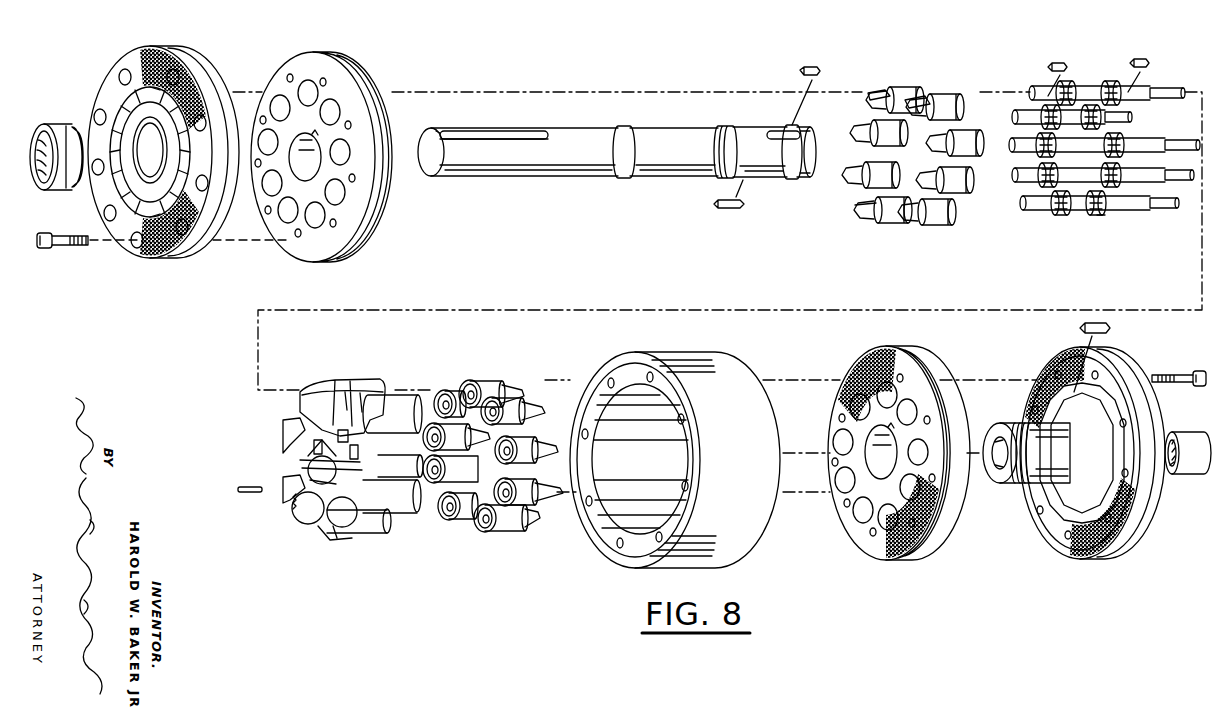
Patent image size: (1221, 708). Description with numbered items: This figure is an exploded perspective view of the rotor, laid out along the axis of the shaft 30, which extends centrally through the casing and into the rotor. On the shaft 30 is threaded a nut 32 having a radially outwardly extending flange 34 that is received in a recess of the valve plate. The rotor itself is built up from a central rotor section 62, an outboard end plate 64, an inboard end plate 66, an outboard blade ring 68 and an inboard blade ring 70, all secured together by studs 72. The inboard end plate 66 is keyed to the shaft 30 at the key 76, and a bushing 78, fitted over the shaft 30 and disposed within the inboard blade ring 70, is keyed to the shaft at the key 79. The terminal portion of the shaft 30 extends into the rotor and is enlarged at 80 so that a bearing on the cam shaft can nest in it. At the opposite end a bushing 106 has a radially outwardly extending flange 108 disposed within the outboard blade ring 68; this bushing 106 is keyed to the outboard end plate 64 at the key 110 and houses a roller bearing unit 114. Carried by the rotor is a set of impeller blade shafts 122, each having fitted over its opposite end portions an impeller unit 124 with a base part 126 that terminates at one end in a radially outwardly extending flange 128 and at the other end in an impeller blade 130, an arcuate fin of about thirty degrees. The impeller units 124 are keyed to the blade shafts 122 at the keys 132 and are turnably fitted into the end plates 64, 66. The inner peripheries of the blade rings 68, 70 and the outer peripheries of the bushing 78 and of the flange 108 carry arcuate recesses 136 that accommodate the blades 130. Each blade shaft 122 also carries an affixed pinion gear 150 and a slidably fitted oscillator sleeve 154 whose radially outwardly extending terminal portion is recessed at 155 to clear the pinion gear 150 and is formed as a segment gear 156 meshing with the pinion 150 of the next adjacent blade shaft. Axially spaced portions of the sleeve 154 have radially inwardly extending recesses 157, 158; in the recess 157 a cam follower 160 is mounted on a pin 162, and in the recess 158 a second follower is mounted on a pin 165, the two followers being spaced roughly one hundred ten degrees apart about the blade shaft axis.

The shaft 30 is at (448, 124).
The nut 32 is at (52, 116).
The flange 34 is at (55, 190).
The central rotor section 62 is at (668, 353).
The outboard end plate 64 is at (863, 363).
The inboard end plate 66 is at (340, 58).
The outboard blade ring 68 is at (1056, 353).
The inboard blade ring 70 is at (179, 47).
The studs 72 is at (70, 234).
The key 76 is at (806, 67).
The bushing 78 is at (133, 128).
The key 79 is at (712, 206).
The enlarged terminal portion of shaft 80 is at (815, 127).
The bushing 106 is at (1006, 472).
The flange 108 is at (1092, 466).
The key 110 is at (1110, 328).
The roller bearing unit 114 is at (1183, 425).
The impeller blade shafts 122 is at (1150, 100).
The impeller unit 124 is at (910, 78).
The base part 126 is at (898, 88).
The flange 128 is at (921, 92).
The impeller blade 130 is at (860, 185).
The key 132 is at (1047, 65).
The arcuate recesses 136 is at (130, 105).
The pinion gear 150 is at (1104, 215).
The oscillator sleeve 154 is at (359, 378).
The recess 155 is at (372, 442).
The segment gear 156 is at (295, 500).
The recess 157 is at (318, 434).
The recess 158 is at (338, 420).
The cam follower 160 is at (314, 456).
The pin 162 is at (245, 494).
The pin 165 is at (322, 522).